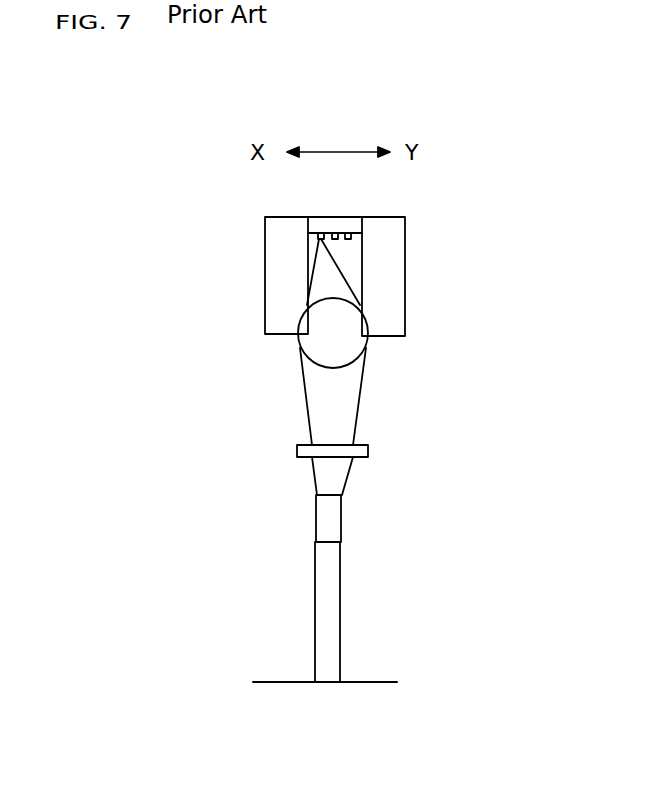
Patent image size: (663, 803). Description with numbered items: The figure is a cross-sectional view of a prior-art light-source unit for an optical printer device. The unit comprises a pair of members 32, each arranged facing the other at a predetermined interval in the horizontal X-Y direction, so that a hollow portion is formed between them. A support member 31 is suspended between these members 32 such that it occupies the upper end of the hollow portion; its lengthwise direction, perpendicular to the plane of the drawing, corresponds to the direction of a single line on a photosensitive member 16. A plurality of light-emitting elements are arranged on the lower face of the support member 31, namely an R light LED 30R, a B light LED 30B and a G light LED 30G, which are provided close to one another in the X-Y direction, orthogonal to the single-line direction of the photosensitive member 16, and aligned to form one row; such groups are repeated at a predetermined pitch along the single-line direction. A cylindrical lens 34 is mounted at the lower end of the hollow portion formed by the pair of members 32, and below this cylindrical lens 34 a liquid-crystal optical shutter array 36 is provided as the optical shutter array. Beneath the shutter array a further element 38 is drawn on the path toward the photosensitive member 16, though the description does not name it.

The photosensitive member 16 is at (350, 682).
The B light LED 30B is at (322, 233).
The G light LED 30G is at (336, 234).
The R light LED 30R is at (349, 235).
The support member 31 is at (312, 218).
The members 32 is at (283, 285).
The cylindrical lens 34 is at (313, 338).
The liquid-crystal optical shutter array 36 is at (366, 447).
The support block 38 is at (327, 515).